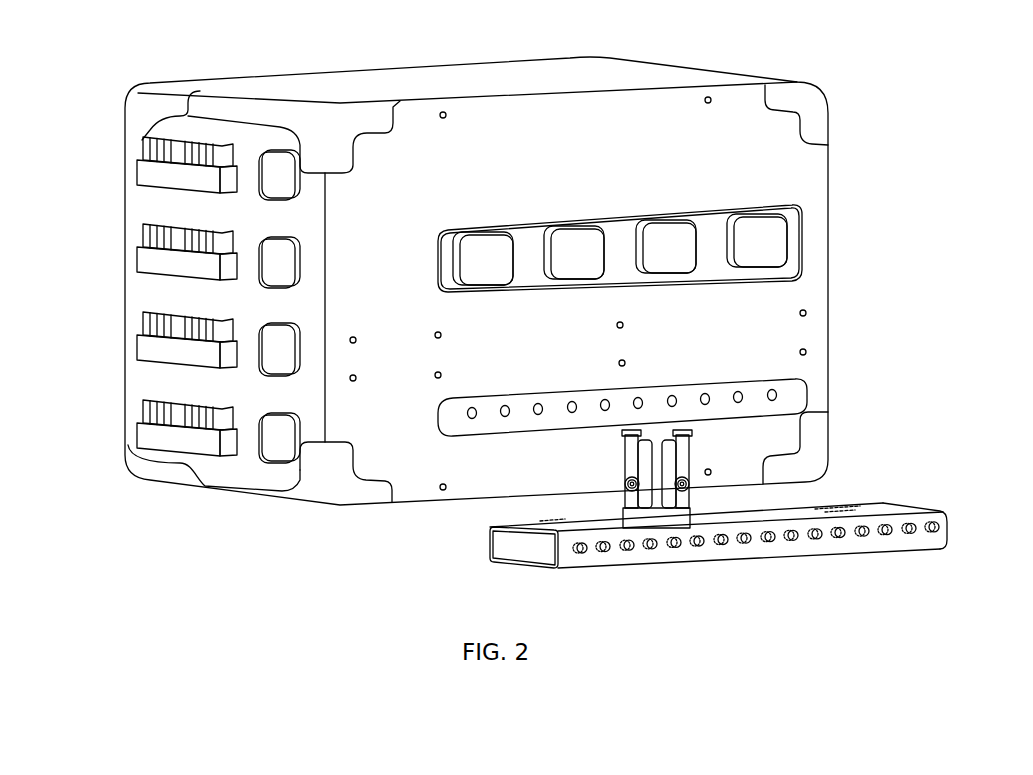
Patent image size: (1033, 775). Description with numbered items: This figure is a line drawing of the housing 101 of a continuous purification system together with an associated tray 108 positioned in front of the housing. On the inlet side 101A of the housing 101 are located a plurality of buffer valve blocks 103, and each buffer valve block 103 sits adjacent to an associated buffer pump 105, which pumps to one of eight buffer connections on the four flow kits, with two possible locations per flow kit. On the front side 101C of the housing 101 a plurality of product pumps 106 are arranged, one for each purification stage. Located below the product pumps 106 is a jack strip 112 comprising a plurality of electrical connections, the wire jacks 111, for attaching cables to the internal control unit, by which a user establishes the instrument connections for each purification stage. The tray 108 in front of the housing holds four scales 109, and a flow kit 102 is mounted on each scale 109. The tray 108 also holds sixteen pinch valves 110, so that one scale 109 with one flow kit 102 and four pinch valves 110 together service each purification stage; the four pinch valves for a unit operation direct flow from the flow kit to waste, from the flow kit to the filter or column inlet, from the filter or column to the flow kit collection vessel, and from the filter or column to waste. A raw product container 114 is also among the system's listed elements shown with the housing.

The housing 101 is at (718, 46).
The inlet side 101A is at (249, 458).
The front side 101C is at (413, 484).
The flow kit 102 is at (663, 530).
The buffer valve block 103 is at (143, 143).
The buffer pump 105 is at (273, 158).
The product pump 106 is at (788, 250).
The tray 108 is at (718, 523).
The scale 109 is at (847, 510).
The pinch valve 110 is at (866, 537).
The wire jacks 111 is at (506, 423).
The jack strip 112 is at (679, 489).
The raw product container 114 is at (148, 172).